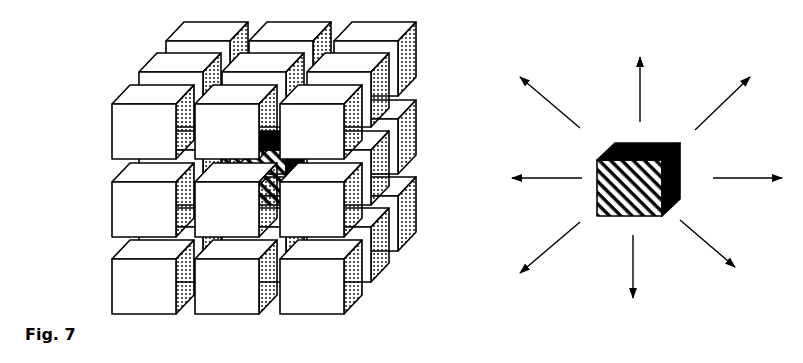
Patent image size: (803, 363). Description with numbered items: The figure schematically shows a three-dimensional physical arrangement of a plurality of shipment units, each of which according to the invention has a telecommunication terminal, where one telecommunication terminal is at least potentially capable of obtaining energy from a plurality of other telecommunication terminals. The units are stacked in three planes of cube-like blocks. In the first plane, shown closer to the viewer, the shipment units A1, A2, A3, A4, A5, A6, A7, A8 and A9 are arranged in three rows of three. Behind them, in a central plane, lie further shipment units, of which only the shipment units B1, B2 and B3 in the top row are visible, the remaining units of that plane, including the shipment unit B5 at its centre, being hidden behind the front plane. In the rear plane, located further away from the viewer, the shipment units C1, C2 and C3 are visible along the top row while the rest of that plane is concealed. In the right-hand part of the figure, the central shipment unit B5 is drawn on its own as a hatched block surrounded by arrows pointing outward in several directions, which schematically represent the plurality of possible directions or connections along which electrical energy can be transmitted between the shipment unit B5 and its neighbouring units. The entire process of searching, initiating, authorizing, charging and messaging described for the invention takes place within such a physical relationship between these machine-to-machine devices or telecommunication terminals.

The shipment unit A1 is at (153, 122).
The shipment unit A2 is at (236, 122).
The shipment unit A3 is at (321, 122).
The shipment unit A4 is at (153, 200).
The shipment unit A5 is at (236, 200).
The shipment unit A6 is at (321, 200).
The shipment unit A7 is at (153, 277).
The shipment unit A8 is at (236, 277).
The shipment unit A9 is at (321, 277).
The shipment unit B1 is at (180, 90).
The shipment unit B2 is at (263, 90).
The shipment unit B3 is at (348, 90).
The shipment unit B5 is at (502, 177).
The shipment unit C1 is at (207, 59).
The shipment unit C2 is at (290, 59).
The shipment unit C3 is at (375, 59).